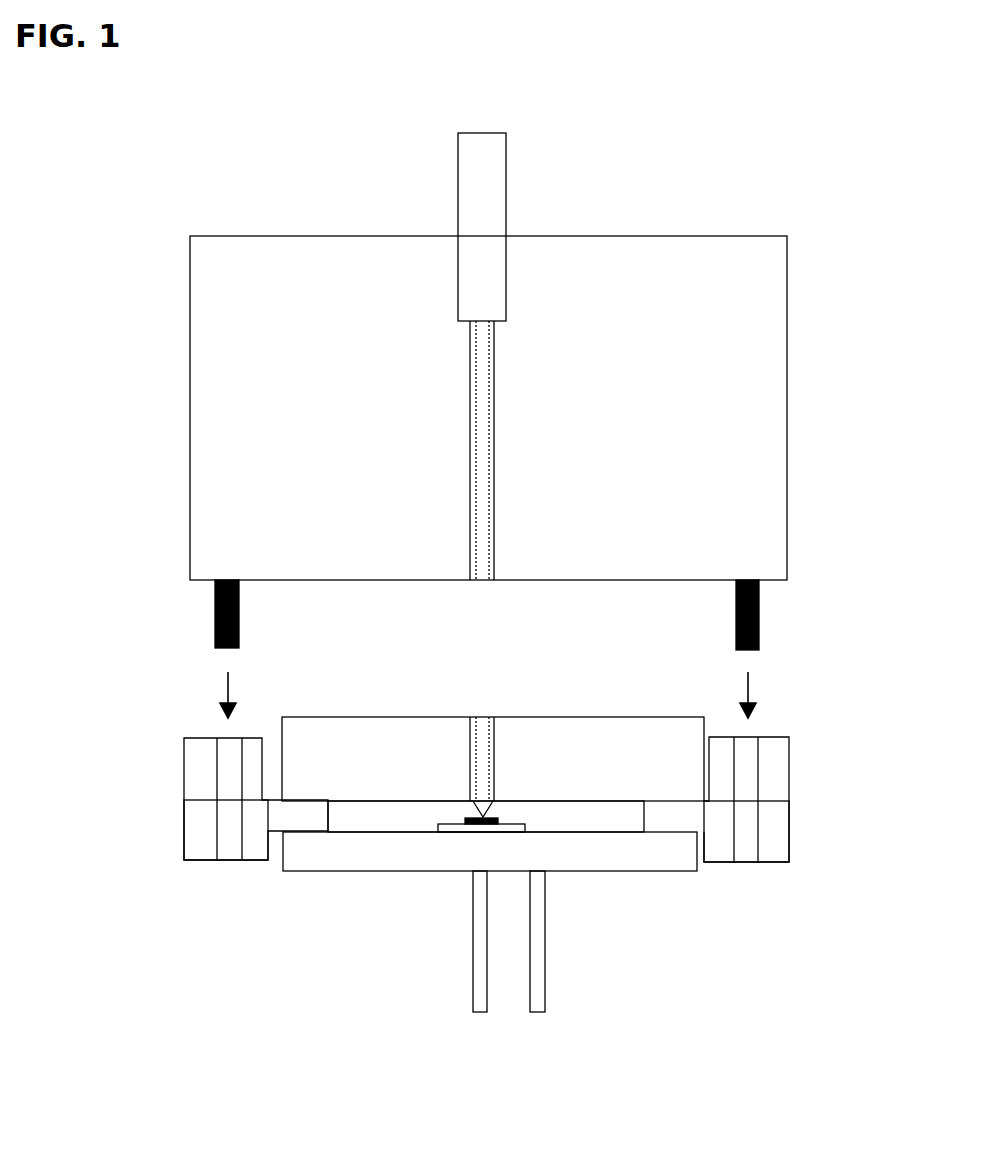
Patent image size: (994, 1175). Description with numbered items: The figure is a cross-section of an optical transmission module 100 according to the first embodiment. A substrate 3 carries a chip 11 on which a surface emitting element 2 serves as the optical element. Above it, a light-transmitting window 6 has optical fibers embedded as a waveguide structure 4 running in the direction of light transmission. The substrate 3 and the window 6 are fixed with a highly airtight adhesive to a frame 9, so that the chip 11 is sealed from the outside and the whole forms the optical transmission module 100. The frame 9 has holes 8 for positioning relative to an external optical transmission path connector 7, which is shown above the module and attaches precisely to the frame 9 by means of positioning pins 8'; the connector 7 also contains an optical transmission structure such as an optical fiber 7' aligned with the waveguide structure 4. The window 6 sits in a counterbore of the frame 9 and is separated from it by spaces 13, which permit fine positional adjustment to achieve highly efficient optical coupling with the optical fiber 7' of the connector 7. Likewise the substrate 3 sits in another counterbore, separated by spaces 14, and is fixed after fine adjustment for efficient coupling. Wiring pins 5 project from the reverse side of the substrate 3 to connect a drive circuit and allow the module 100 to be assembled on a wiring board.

The external optical transmission path connector 7 is at (535, 356).
The optical fiber 7' is at (314, 450).
The positioning pins 8' is at (446, 624).
The optical transmission module 100 is at (105, 716).
The light-transmitting window 6 is at (427, 768).
The waveguide structure 4 is at (482, 737).
The surface emitting element 2 is at (498, 820).
The chip 11 is at (527, 830).
The substrate 3 is at (375, 855).
The wiring pins 5 is at (545, 963).
The holes 8 is at (219, 799).
The frame 9 is at (212, 845).
The spaces 13 is at (728, 738).
The spaces 14 is at (702, 848).